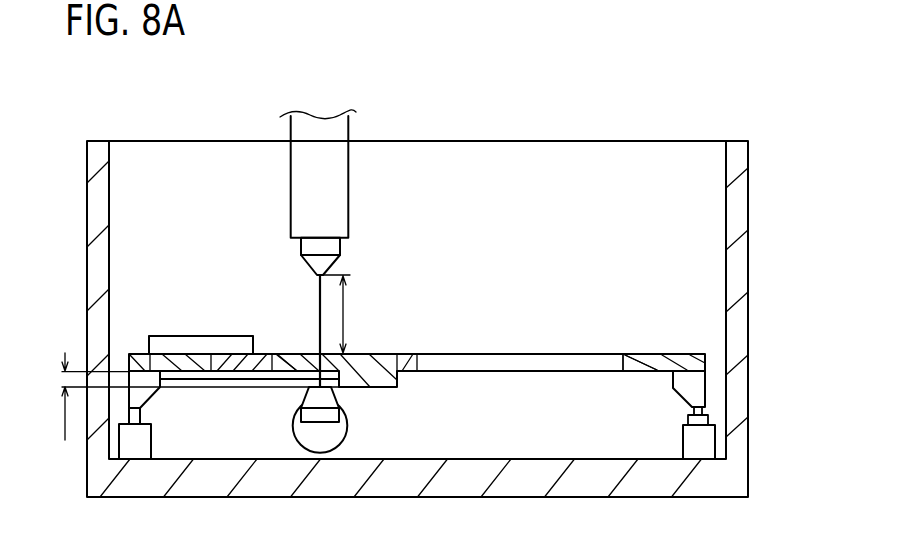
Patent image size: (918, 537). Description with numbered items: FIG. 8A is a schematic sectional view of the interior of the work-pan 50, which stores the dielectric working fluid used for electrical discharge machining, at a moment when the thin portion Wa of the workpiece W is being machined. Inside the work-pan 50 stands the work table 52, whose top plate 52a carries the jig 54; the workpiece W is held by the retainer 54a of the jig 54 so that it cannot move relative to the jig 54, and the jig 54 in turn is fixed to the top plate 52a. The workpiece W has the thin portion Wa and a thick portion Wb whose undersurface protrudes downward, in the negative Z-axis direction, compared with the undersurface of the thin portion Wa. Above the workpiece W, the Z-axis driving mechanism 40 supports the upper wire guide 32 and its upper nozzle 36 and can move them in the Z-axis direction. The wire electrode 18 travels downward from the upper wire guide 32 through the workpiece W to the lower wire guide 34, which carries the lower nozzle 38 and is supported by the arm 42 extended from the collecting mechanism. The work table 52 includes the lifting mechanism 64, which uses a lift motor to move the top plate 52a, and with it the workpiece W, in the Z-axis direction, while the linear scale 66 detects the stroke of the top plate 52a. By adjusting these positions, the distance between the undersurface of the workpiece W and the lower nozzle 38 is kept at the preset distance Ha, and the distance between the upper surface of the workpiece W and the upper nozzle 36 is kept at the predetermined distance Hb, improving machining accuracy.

The work-pan 50 is at (735, 209).
The Z-axis driving mechanism 40 is at (306, 211).
The upper wire guide 32 is at (332, 245).
The upper nozzle 36 is at (311, 260).
The wire electrode 18 is at (318, 290).
The workpiece W is at (377, 345).
The thin portion Wa is at (290, 360).
The thick portion Wb is at (387, 357).
The predetermined distance Hb is at (349, 314).
The preset distance Ha is at (187, 396).
The jig 54 is at (192, 320).
The retainer 54a is at (265, 353).
The work table 52 is at (676, 338).
The top plate 52a is at (650, 353).
The linear scale 66 is at (685, 421).
The lifting mechanism 64 is at (697, 443).
The arm 42 is at (303, 433).
The lower nozzle 38 is at (307, 400).
The lower wire guide 34 is at (342, 420).